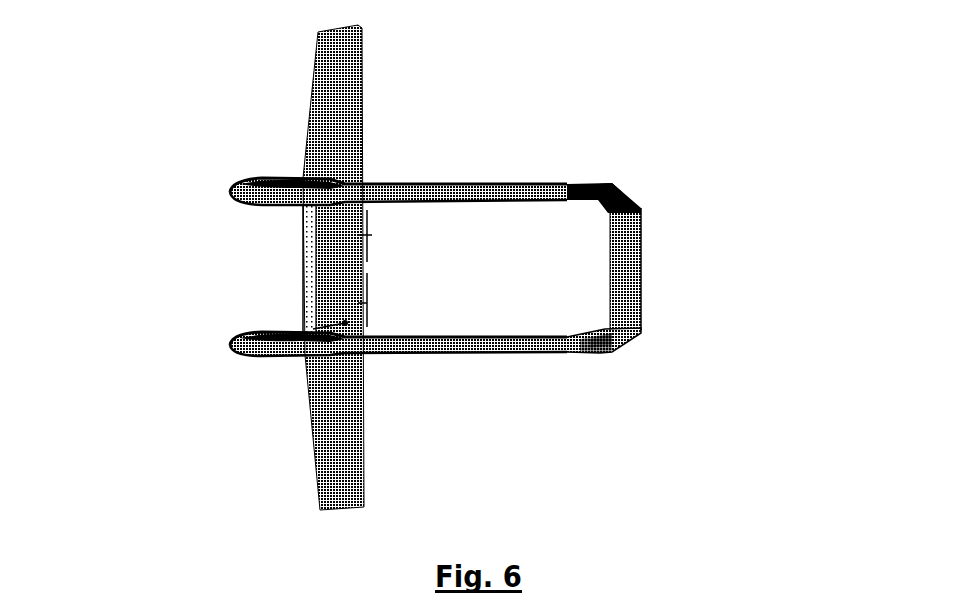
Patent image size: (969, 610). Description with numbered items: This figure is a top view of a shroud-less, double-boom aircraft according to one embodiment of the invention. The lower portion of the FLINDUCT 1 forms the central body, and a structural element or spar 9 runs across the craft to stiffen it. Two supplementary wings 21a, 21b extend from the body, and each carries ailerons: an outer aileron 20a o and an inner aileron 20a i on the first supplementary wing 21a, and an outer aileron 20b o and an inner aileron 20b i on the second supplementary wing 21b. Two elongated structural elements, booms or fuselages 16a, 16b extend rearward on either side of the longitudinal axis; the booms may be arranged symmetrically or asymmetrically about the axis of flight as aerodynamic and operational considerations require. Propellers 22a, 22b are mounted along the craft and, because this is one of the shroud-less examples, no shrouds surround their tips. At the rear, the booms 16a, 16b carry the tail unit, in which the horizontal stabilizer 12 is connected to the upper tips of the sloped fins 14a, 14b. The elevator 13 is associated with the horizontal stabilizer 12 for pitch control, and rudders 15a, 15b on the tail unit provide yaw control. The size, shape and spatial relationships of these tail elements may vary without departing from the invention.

The lower portion of the FLINDUCT 1 is at (442, 270).
The spar 9 is at (198, 270).
The horizontal stabilizer 12 is at (617, 266).
The elevator 13 is at (709, 249).
The sloped fin 14a is at (612, 187).
The sloped fin 14b is at (605, 337).
The rudder 15a is at (612, 185).
The rudder 15b is at (609, 348).
The boom 16a is at (312, 193).
The boom 16b is at (308, 343).
The aileron 20a o is at (352, 73).
The aileron 20a i is at (353, 215).
The aileron 20b o is at (353, 447).
The aileron 20b i is at (307, 343).
The supplementary wing 21a is at (197, 146).
The supplementary wing 21b is at (207, 391).
The propeller 22a is at (372, 235).
The propeller 22b is at (367, 303).